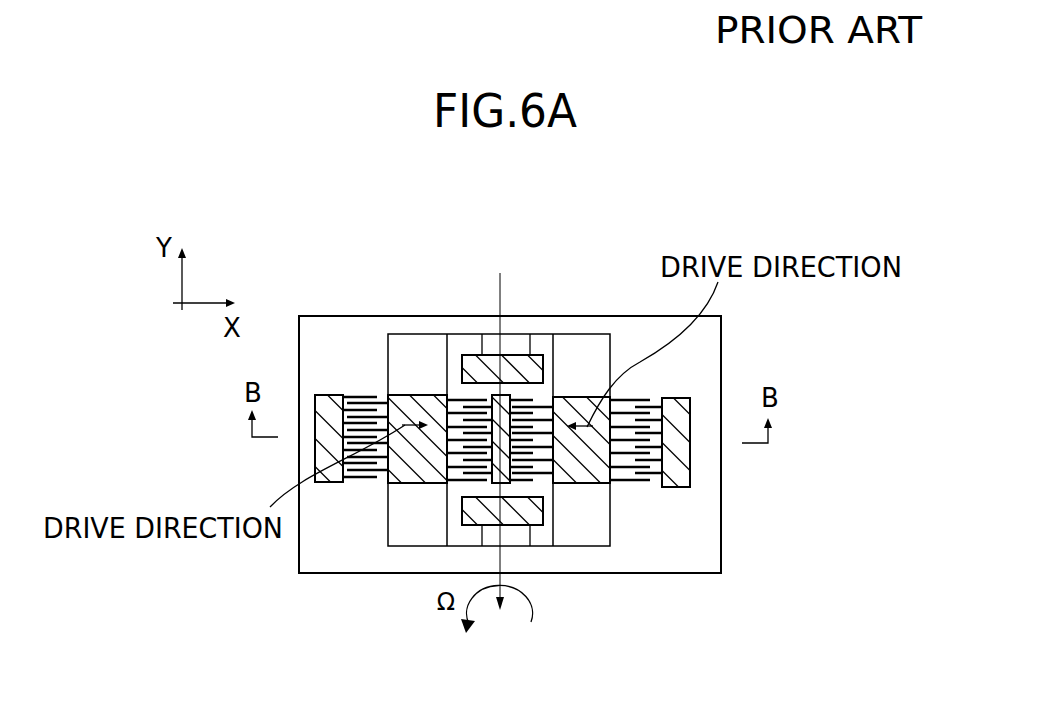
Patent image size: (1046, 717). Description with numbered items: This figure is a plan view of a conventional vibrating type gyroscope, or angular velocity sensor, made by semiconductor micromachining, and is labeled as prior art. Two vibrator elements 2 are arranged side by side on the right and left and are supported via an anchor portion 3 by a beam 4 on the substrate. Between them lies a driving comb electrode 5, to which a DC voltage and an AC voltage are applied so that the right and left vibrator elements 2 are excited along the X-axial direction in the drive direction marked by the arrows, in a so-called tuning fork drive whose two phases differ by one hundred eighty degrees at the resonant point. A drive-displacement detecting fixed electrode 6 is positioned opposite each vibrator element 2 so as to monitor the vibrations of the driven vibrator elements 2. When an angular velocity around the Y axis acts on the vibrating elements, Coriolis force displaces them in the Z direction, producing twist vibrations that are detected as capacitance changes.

The vibrator element 2 is at (405, 472).
The anchor portion 3 is at (472, 358).
The beam 4 is at (585, 345).
The driving comb electrode 5 is at (500, 398).
The drive-displacement detecting fixed electrode 6 is at (683, 407).